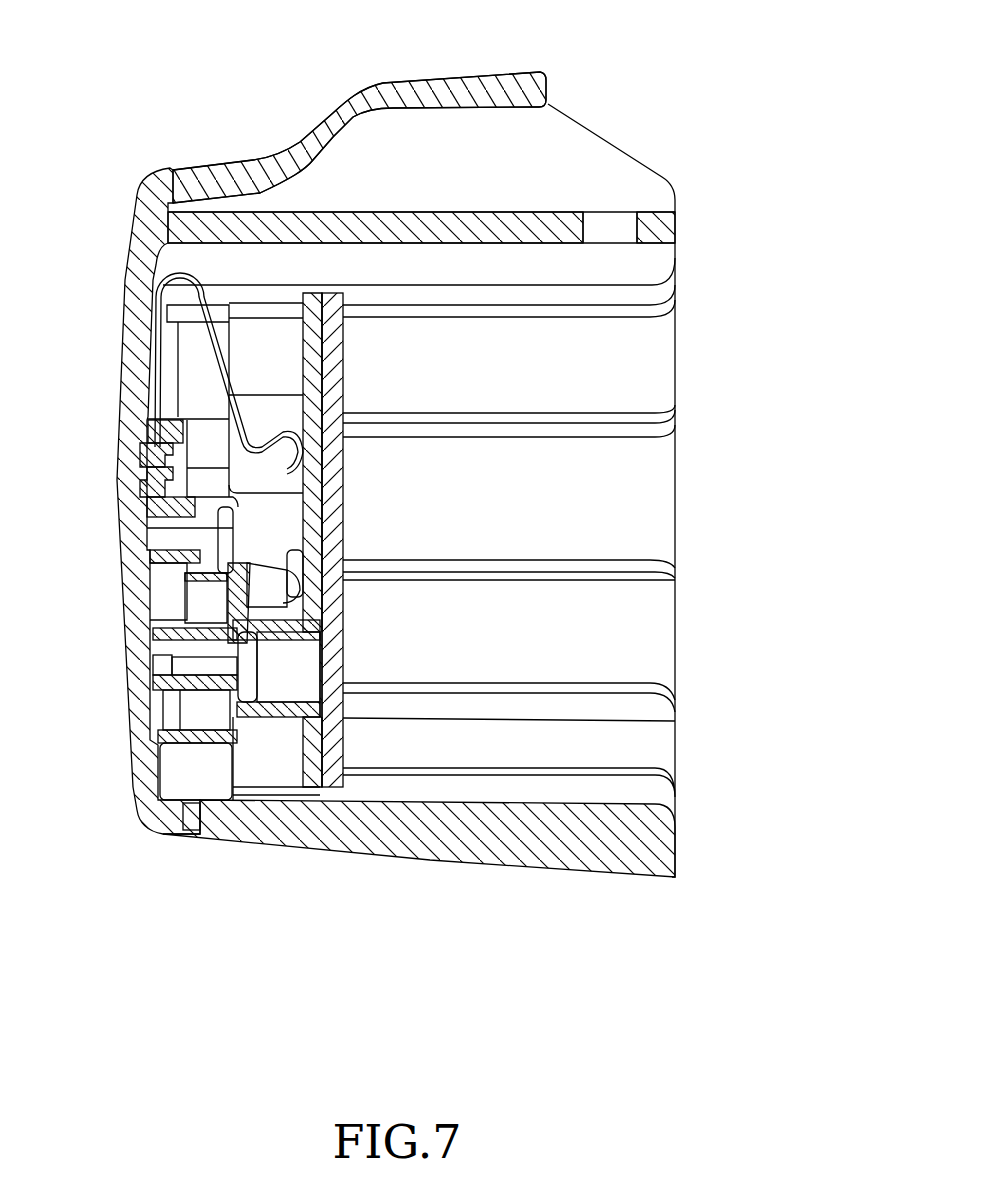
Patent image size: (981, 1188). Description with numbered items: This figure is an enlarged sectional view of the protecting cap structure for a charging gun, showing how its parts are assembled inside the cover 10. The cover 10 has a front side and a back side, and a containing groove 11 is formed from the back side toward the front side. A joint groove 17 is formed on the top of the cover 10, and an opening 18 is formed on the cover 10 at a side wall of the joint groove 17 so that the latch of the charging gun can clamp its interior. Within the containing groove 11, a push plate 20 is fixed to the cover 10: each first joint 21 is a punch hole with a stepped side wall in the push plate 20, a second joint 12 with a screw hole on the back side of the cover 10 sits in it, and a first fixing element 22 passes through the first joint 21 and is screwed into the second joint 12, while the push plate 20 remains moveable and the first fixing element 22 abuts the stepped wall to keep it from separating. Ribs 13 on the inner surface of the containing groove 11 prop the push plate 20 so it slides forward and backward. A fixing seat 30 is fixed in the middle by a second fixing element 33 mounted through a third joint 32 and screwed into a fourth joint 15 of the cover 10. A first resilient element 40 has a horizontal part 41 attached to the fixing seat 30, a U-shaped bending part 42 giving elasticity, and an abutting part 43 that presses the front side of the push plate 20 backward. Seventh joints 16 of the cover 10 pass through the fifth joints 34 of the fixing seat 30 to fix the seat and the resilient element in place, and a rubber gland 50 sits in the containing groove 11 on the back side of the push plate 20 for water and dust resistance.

The cover 10 is at (168, 168).
The containing groove 11 is at (513, 512).
The second joint 12 is at (165, 628).
The rib 13 is at (443, 253).
The fourth joint 15 is at (165, 505).
The seventh joint 16 is at (160, 433).
The joint groove 17 is at (483, 115).
The opening 18 is at (637, 222).
The push plate 20 is at (310, 750).
The first joint 21 is at (270, 710).
The first fixing element 22 is at (237, 642).
The fixing seat 30 is at (173, 432).
The third joint 32 is at (155, 585).
The second fixing element 33 is at (162, 542).
The fifth joint 34 is at (177, 447).
The first resilient element 40 is at (220, 352).
The horizontal part 41 is at (152, 289).
The U-shaped bending part 42 is at (195, 225).
The abutting part 43 is at (237, 397).
The gland 50 is at (338, 775).